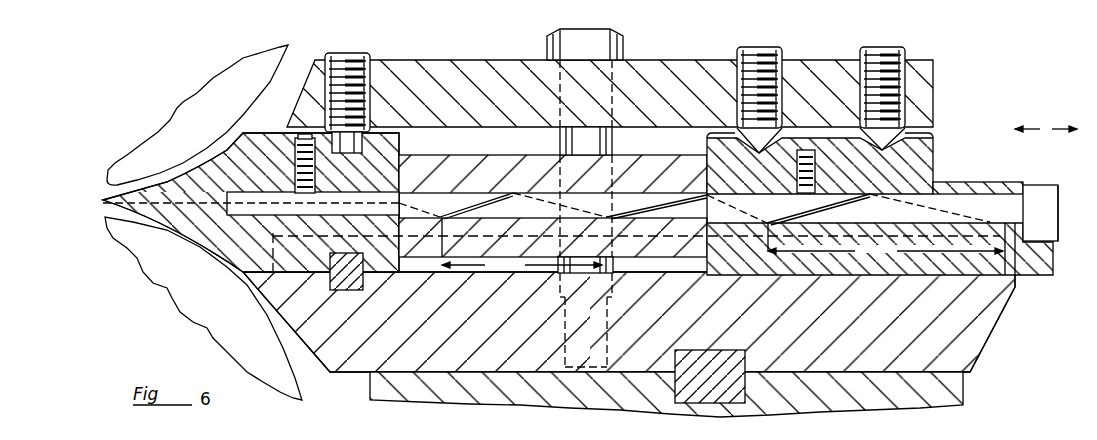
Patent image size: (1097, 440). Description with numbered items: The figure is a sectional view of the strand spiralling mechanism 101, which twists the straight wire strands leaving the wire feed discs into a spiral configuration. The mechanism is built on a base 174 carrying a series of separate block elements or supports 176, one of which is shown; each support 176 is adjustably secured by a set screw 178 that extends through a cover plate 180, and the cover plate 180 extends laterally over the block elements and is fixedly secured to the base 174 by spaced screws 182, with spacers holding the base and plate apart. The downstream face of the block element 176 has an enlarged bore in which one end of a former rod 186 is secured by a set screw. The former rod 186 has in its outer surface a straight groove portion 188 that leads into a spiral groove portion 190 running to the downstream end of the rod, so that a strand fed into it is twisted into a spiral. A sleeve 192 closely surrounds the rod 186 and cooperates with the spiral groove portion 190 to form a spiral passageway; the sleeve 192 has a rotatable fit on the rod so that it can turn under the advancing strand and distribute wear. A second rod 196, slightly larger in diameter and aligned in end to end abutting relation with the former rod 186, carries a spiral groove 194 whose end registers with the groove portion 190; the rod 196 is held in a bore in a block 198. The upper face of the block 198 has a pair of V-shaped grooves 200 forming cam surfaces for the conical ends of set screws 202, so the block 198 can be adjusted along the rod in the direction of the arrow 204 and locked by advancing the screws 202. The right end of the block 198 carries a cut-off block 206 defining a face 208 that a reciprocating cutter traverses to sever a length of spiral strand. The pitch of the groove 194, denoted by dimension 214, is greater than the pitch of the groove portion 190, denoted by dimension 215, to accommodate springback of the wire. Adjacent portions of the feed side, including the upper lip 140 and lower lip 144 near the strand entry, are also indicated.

The strand spiralling mechanism 101 is at (988, 379).
The upper lip 140 is at (240, 97).
The lower lip 144 is at (283, 382).
The base 174 is at (497, 375).
The block element 176 is at (237, 258).
The set screw 178 is at (347, 54).
The cover plate 180 is at (437, 60).
The screw 182 is at (620, 51).
The former rod 186 is at (248, 211).
The straight groove portion 188 is at (342, 197).
The spiral groove portion 190 is at (480, 204).
The sleeve 192 is at (463, 163).
The spiral groove 194 is at (817, 208).
The second rod 196 is at (965, 198).
The block 198 is at (925, 162).
The V-shaped groove 200 is at (707, 137).
The set screw 202 is at (760, 48).
The arrow 204 is at (1060, 115).
The cut-off block 206 is at (1060, 176).
The face 208 is at (1060, 235).
The dimension 214 is at (885, 251).
The dimension 215 is at (522, 265).